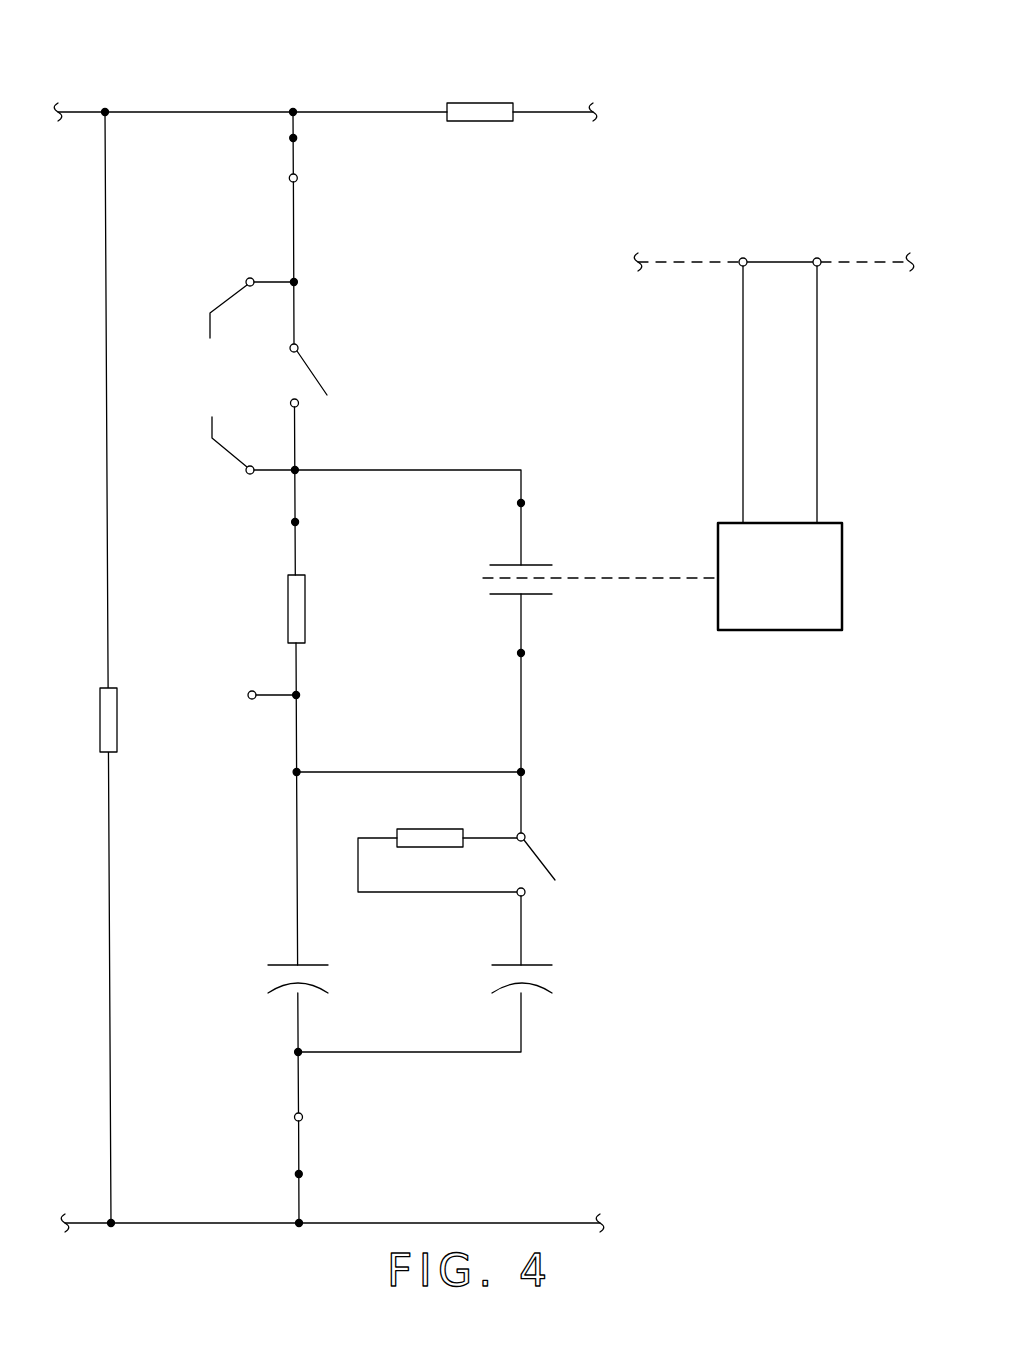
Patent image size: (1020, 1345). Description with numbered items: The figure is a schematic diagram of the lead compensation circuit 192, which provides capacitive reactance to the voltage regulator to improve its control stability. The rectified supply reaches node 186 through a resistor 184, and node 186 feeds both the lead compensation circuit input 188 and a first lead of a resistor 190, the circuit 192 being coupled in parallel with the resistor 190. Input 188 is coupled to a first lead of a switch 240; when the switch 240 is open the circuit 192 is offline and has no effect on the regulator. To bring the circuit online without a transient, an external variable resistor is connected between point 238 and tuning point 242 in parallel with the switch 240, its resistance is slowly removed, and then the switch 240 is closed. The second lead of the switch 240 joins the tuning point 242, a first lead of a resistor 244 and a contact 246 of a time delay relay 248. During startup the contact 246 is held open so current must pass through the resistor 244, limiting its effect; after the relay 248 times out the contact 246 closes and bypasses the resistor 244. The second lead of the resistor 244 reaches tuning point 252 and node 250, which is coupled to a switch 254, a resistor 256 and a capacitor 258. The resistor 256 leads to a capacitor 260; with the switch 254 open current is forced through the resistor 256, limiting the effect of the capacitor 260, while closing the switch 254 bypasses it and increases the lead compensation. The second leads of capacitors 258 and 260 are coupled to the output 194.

The lead compensation circuit 192 is at (498, 70).
The node 186 is at (216, 114).
The resistor 184 is at (468, 121).
The lead compensation circuit input 188 is at (298, 180).
The point 238 is at (208, 325).
The switch 240 is at (302, 348).
The tuning point 242 is at (208, 428).
The resistor 244 is at (288, 606).
The contact 246 is at (540, 563).
The time delay relay 248 is at (804, 592).
The resistor 190 is at (117, 720).
The tuning point 252 is at (252, 699).
The node 250 is at (440, 770).
The resistor 256 is at (430, 828).
The switch 254 is at (545, 862).
The capacitor 258 is at (280, 962).
The capacitor 260 is at (542, 985).
The output 194 is at (303, 1117).